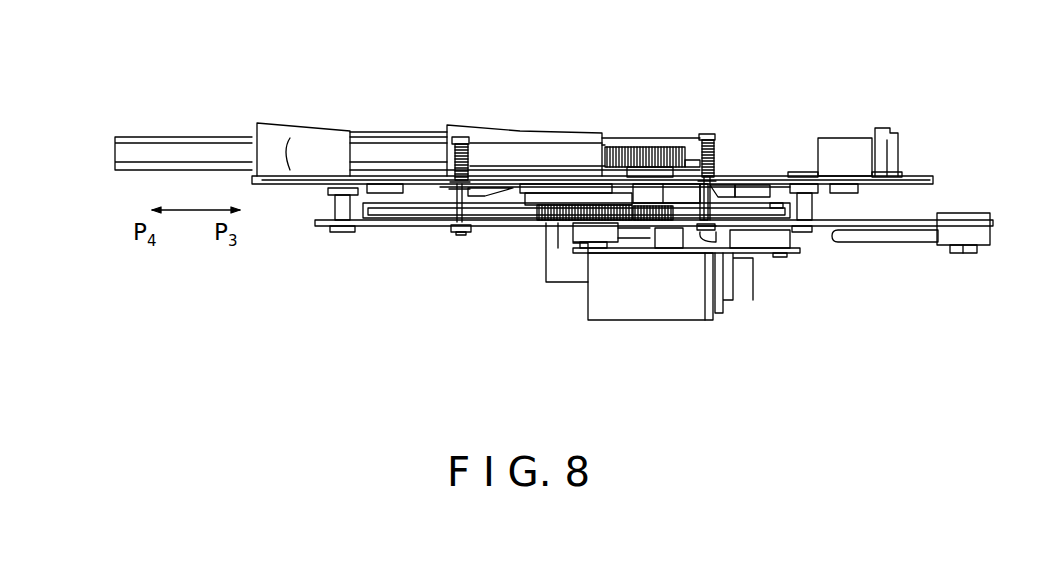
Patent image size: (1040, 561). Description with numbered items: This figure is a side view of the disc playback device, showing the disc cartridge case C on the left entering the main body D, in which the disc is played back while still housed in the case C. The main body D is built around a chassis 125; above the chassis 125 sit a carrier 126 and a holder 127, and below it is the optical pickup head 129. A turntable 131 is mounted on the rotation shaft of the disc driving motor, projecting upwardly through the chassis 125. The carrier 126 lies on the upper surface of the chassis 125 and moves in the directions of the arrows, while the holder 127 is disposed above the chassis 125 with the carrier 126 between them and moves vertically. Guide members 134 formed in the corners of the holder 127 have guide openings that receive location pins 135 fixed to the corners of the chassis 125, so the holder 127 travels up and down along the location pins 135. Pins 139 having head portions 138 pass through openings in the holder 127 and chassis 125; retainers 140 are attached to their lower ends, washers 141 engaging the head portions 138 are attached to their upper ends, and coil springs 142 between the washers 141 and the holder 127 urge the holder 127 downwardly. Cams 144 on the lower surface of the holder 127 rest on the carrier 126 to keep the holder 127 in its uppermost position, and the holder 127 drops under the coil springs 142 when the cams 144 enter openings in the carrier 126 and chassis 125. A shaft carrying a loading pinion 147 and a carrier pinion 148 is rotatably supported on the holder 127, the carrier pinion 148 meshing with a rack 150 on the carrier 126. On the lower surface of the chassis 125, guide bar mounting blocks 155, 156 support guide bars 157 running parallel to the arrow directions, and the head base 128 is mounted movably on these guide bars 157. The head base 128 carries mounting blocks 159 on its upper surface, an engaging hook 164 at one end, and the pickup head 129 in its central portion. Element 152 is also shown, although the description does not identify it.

The chassis 125 is at (400, 228).
The carrier 126 is at (437, 217).
The holder 127 is at (313, 175).
The head base 128 is at (722, 258).
The optical pickup head 129 is at (618, 310).
The turntable 131 is at (575, 198).
The guide members 134 is at (330, 192).
The location pins 135 is at (340, 205).
The head portions 138 is at (462, 138).
The pins 139 is at (452, 197).
The retainers 140 is at (464, 229).
The washers 141 is at (452, 160).
The coil springs 142 is at (453, 142).
The cams 144 is at (482, 193).
The loading pinion 147 is at (647, 150).
The carrier pinion 148 is at (641, 221).
The rack 150 is at (558, 222).
The stopper 152 is at (383, 193).
The guide bar mounting blocks 155 is at (989, 232).
The guide bar mounting blocks 156 is at (575, 232).
The guide bars 157 is at (927, 233).
The mounting blocks 159 is at (668, 241).
The engaging hook 164 is at (795, 243).
The disc cartridge case C is at (200, 133).
The main body D is at (773, 148).